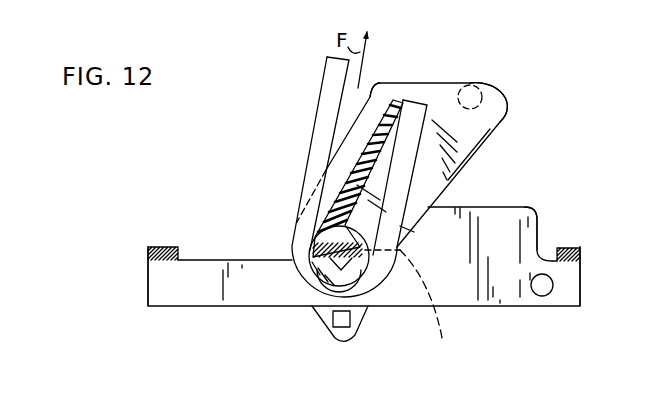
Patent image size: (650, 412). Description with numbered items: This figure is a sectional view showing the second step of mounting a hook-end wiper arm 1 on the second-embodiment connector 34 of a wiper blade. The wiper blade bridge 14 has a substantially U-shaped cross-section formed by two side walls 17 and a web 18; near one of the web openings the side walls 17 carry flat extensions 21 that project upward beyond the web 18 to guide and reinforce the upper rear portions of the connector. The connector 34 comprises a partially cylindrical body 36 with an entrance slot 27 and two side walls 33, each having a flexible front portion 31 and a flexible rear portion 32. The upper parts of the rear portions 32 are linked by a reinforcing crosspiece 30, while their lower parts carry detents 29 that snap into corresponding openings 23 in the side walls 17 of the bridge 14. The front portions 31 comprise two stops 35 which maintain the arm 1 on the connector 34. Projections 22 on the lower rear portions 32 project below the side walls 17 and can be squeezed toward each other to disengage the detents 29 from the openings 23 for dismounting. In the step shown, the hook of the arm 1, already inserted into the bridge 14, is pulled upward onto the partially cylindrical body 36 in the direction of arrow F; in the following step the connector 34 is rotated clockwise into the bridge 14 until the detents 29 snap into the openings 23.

The wiper arm 1 is at (310, 133).
The wiper blade bridge 14 is at (223, 309).
The side walls 17 is at (158, 285).
The web 18 is at (158, 248).
The flat extensions 21 is at (523, 213).
The projections 22 is at (503, 112).
The openings 23 is at (542, 286).
The entrance slot 27 is at (433, 311).
The detents 29 is at (492, 66).
The reinforcing crosspiece 30 is at (398, 98).
The front portions 31 is at (323, 318).
The rear portions 32 is at (478, 143).
The side walls 33 is at (372, 100).
The connector 34 is at (452, 177).
The stops 35 is at (350, 320).
The partially cylindrical body 36 is at (315, 280).